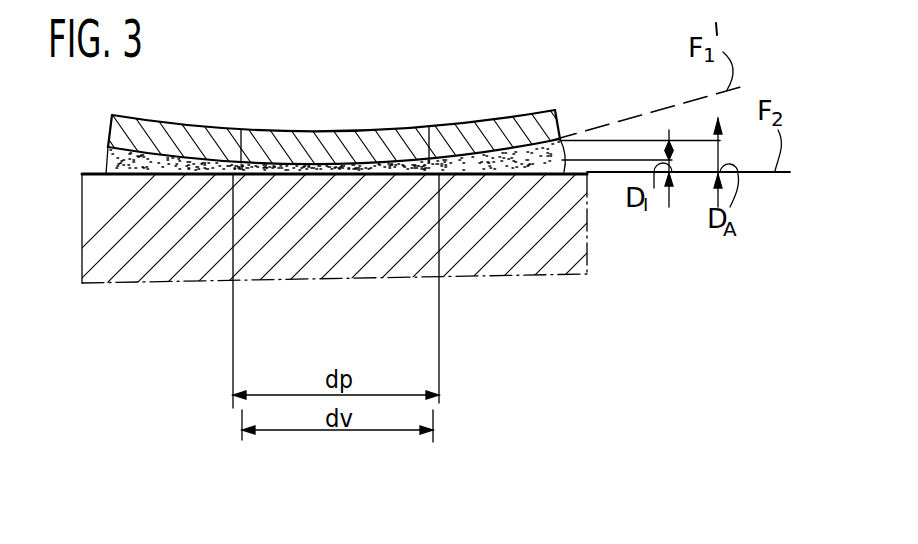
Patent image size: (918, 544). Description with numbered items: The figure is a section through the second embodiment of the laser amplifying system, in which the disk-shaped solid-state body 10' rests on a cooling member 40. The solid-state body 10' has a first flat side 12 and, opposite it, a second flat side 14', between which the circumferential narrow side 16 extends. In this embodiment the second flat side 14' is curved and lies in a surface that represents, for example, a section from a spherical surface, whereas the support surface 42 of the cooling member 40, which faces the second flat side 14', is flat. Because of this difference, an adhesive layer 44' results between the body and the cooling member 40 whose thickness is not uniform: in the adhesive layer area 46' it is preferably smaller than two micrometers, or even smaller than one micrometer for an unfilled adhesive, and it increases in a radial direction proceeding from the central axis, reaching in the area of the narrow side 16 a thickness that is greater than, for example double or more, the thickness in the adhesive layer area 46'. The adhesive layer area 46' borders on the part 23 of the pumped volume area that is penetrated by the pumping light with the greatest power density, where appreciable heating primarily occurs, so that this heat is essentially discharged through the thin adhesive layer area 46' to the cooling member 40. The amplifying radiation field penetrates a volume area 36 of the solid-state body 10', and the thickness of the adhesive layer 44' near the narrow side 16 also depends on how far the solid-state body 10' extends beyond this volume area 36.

The solid-state body 10' is at (329, 95).
The first flat side 12 is at (383, 128).
The volume area 36 is at (323, 130).
The adhesive layer area 46' is at (227, 91).
The part of the volume area 23 is at (278, 128).
The narrow side 16 is at (561, 138).
The adhesive layer 44' is at (297, 249).
The second flat side 14' is at (616, 91).
The support surface 42 is at (580, 162).
The cooling member 40 is at (553, 250).